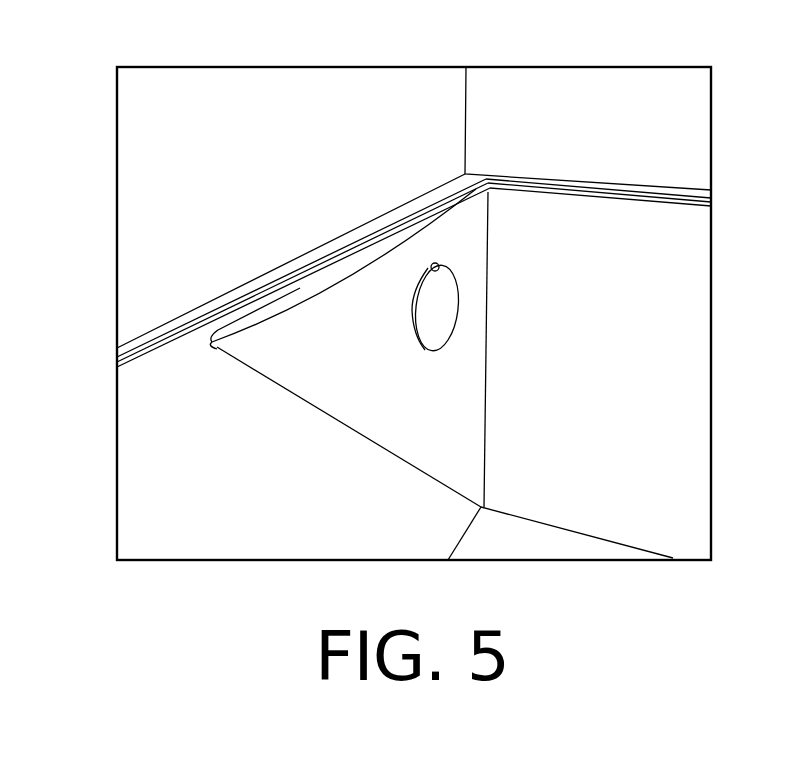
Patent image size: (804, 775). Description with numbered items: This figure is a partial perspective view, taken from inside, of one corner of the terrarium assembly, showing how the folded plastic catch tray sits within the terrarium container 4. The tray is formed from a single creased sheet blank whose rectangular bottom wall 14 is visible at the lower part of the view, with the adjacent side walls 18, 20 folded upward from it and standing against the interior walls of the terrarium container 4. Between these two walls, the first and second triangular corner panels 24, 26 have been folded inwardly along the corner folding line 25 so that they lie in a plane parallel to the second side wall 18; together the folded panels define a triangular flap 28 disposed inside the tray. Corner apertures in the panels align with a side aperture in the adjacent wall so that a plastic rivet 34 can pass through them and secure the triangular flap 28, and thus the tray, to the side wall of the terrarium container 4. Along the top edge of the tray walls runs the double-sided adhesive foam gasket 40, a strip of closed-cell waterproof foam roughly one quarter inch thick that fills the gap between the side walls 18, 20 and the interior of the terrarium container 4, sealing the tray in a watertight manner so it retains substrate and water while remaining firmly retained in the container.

The terrarium container 4 is at (160, 148).
The second side wall 18 is at (186, 494).
The first side wall 20 is at (632, 288).
The adhesive foam gasket 40 is at (423, 206).
The second triangular corner panel 26 is at (272, 312).
The triangular flap 28 is at (245, 367).
The corner folding line 25 is at (292, 395).
The first triangular corner panel 24 is at (380, 415).
The bottom wall 14 is at (528, 540).
The rivet 34 is at (427, 318).